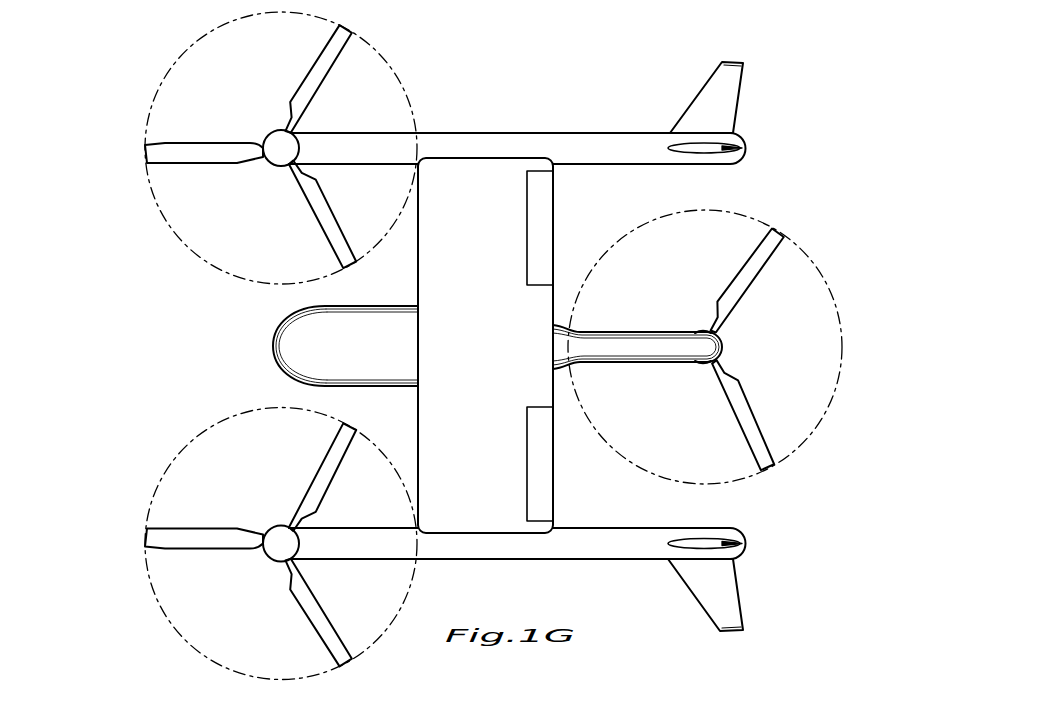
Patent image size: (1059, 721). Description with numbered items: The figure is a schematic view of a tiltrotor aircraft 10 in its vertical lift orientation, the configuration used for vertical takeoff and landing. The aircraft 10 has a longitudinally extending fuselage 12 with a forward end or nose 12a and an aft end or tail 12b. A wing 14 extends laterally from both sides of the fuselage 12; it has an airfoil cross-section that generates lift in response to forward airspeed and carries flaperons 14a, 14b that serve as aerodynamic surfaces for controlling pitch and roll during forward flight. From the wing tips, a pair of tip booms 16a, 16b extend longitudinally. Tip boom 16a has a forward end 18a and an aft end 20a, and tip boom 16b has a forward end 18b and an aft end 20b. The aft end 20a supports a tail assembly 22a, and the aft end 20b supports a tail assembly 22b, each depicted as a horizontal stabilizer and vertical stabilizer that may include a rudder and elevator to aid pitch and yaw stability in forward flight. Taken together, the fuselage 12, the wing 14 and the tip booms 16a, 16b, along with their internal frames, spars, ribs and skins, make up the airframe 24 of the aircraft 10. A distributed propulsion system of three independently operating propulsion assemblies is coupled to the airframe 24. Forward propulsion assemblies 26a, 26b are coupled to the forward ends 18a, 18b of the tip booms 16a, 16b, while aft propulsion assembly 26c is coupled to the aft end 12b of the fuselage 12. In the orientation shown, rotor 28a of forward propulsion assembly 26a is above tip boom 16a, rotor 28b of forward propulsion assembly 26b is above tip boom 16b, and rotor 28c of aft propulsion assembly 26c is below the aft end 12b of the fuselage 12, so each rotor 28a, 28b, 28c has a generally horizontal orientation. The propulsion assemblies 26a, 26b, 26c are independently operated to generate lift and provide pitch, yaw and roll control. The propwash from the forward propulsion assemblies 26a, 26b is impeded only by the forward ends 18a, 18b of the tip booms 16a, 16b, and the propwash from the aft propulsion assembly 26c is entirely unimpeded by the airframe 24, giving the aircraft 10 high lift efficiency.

The tiltrotor aircraft 10 is at (465, 343).
The fuselage 12 is at (303, 316).
The nose 12a is at (272, 350).
The tail 12b is at (703, 340).
The wing 14 is at (430, 418).
The flaperon 14a is at (547, 462).
The flaperon 14b is at (547, 228).
The tip boom 16a is at (605, 550).
The tip boom 16b is at (473, 138).
The forward end of tip boom 18a is at (307, 545).
The forward end of tip boom 18b is at (307, 150).
The aft end of tip boom 20a is at (732, 533).
The aft end of tip boom 20b is at (732, 158).
The tail assembly 22a is at (737, 602).
The tail assembly 22b is at (735, 90).
The airframe 24 is at (539, 128).
The forward propulsion assembly 26a is at (275, 533).
The forward propulsion assembly 26b is at (277, 165).
The aft propulsion assembly 26c is at (713, 363).
The rotor 28a is at (157, 541).
The rotor 28b is at (157, 155).
The rotor 28c is at (777, 242).